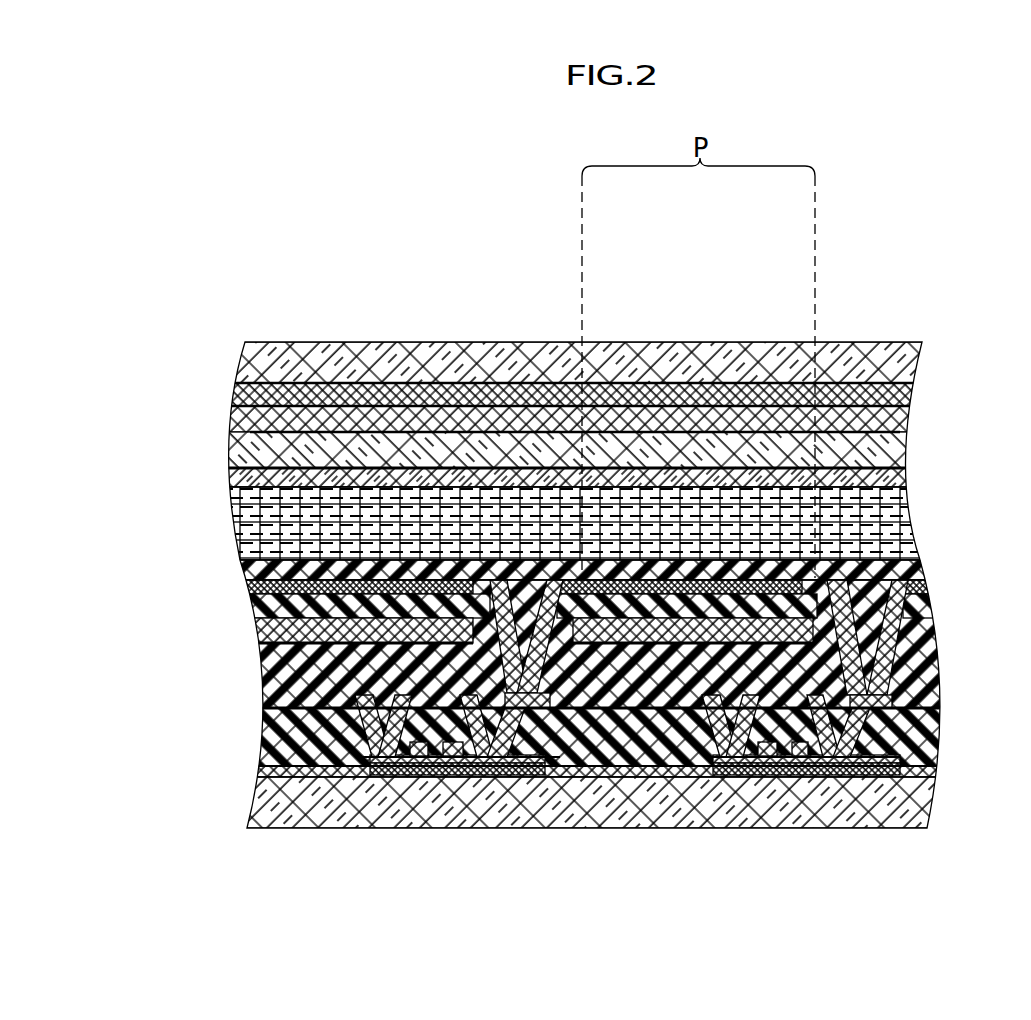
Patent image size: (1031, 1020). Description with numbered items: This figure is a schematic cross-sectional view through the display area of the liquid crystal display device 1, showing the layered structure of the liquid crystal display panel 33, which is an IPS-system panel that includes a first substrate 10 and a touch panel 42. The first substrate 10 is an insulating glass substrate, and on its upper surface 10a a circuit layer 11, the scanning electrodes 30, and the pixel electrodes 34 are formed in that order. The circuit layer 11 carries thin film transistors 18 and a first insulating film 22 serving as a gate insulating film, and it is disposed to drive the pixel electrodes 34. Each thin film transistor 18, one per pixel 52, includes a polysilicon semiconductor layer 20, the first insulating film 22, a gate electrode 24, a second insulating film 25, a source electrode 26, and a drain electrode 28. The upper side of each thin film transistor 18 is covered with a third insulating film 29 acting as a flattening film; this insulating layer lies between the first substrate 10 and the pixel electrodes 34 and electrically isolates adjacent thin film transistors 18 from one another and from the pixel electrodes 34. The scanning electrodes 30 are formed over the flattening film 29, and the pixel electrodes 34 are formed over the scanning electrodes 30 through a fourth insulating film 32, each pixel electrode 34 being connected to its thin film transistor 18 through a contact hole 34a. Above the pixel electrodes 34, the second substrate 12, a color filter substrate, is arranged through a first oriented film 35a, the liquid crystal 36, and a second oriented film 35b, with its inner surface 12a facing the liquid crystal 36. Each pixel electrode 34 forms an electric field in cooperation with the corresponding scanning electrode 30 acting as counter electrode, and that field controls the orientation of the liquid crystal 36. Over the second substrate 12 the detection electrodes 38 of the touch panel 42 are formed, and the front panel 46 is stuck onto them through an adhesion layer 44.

The liquid crystal display device 1 is at (980, 197).
The first substrate 10 is at (922, 806).
The upper surface 10a is at (907, 769).
The circuit layer 11 is at (663, 791).
The second substrate 12 is at (896, 447).
The inner surface of second substrate 12a is at (320, 433).
The thin film transistor 18 is at (532, 770).
The polysilicon semiconductor layer 20 is at (497, 770).
The first insulating film 22 is at (418, 770).
The gate electrode 24 is at (403, 770).
The second insulating film 25 is at (272, 730).
The source electrode 26 is at (573, 770).
The drain electrode 28 is at (350, 770).
The third insulating film 29 is at (270, 677).
The scanning electrode 30 is at (668, 770).
The fourth insulating film 32 is at (815, 608).
The liquid crystal display panel 33 is at (202, 432).
The pixel electrode 34 is at (690, 577).
The contact hole 34a is at (890, 641).
The first oriented film 35a is at (912, 575).
The second oriented film 35b is at (900, 474).
The liquid crystal 36 is at (900, 514).
The detection electrode 38 is at (897, 420).
The touch panel 42 is at (177, 408).
The adhesion layer 44 is at (898, 396).
The front panel 46 is at (912, 352).
The sub-pixel 52 is at (727, 314).